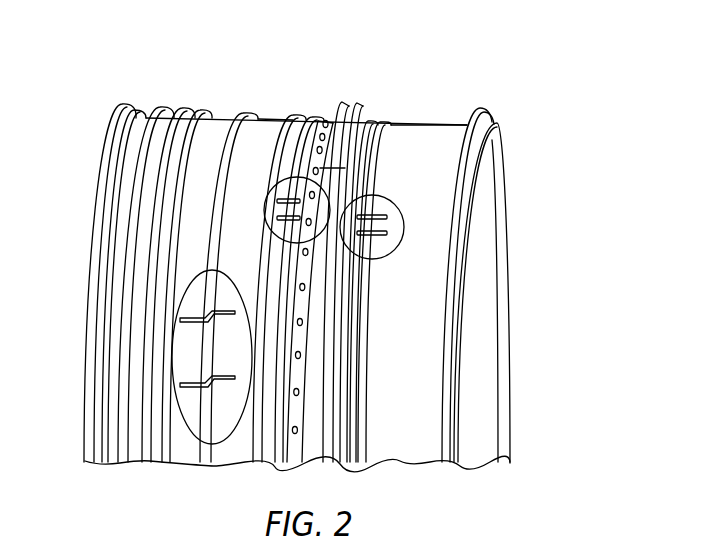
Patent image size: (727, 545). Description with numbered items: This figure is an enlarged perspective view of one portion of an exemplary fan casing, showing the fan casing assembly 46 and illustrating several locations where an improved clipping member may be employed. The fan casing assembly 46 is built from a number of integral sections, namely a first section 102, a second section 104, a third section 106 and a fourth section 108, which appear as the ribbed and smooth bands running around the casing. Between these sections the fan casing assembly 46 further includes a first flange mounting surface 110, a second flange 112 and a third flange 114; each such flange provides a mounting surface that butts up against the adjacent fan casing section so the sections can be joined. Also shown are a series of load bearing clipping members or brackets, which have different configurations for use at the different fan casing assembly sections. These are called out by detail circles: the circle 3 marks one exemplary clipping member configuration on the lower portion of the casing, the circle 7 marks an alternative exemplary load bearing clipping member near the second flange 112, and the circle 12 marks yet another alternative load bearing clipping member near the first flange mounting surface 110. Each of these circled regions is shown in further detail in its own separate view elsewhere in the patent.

The fan casing assembly 46 is at (505, 80).
The fourth section 108 is at (144, 108).
The third flange 114 is at (235, 118).
The third section 106 is at (253, 137).
The circle 3 is at (193, 440).
The second flange 112 is at (315, 123).
The circle 7 is at (293, 177).
The second section 104 is at (343, 100).
The first flange mounting surface 110 is at (368, 118).
The circle 12 is at (404, 227).
The first section 102 is at (408, 137).